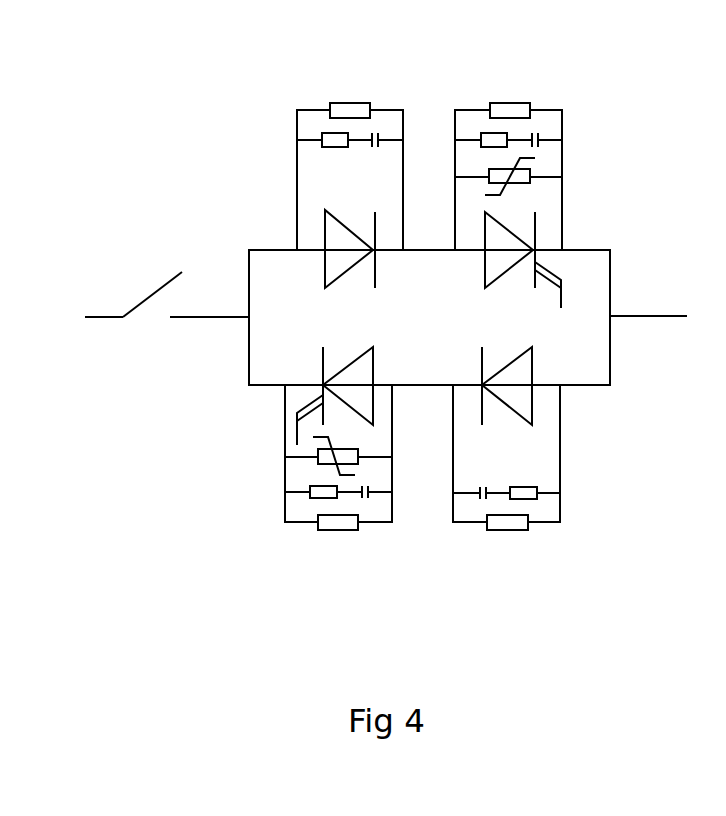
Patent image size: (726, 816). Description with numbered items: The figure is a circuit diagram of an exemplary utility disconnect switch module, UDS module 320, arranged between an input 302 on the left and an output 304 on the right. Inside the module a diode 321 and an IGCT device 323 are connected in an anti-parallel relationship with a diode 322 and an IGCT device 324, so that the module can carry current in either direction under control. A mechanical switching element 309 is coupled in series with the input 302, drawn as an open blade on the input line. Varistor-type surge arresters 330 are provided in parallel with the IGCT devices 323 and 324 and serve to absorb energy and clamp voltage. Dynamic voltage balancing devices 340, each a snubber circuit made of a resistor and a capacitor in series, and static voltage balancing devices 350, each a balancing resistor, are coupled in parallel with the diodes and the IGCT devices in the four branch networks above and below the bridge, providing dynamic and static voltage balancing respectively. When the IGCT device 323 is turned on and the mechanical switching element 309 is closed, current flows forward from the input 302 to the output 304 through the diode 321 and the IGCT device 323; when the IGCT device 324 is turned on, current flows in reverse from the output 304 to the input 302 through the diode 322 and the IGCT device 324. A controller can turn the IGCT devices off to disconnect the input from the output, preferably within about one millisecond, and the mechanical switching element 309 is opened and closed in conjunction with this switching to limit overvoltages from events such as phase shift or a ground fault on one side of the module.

The input 302 is at (108, 317).
The output 304 is at (648, 316).
The mechanical switching element 309 is at (158, 284).
The UDS module 320 is at (608, 88).
The diode 321 is at (336, 287).
The diode 322 is at (531, 347).
The IGCT device 323 is at (485, 273).
The IGCT device 324 is at (375, 347).
The varistor-type surge arrester 330 is at (525, 183).
The dynamic voltage balancing device 340 is at (356, 153).
The static voltage balancing device 350 is at (353, 103).